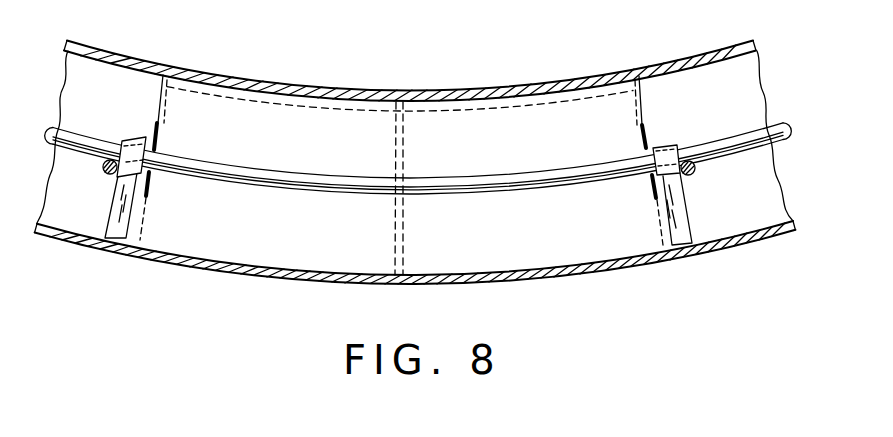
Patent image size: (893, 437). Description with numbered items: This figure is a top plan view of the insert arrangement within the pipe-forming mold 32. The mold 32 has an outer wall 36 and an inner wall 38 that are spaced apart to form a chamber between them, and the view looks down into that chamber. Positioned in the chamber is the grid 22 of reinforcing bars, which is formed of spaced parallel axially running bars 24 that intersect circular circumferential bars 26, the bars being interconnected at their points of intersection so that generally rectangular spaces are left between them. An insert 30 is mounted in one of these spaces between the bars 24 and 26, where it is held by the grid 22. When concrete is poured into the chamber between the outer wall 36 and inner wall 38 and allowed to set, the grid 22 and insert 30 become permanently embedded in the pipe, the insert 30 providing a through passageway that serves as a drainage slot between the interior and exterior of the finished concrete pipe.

The grid 22 is at (113, 101).
The axially running bars 24 is at (108, 173).
The circular circumferential bars 26 is at (717, 133).
The insert 30 is at (273, 232).
The mold 32 is at (727, 247).
The outer wall 36 is at (647, 263).
The inner wall 38 is at (511, 85).